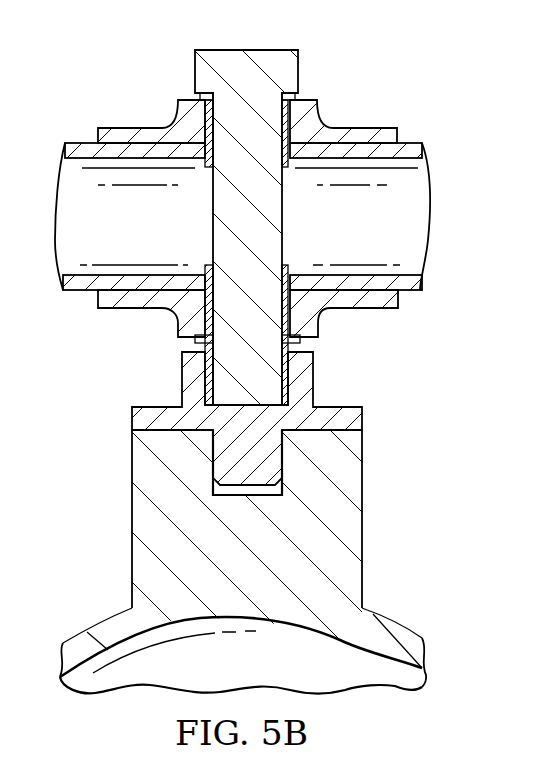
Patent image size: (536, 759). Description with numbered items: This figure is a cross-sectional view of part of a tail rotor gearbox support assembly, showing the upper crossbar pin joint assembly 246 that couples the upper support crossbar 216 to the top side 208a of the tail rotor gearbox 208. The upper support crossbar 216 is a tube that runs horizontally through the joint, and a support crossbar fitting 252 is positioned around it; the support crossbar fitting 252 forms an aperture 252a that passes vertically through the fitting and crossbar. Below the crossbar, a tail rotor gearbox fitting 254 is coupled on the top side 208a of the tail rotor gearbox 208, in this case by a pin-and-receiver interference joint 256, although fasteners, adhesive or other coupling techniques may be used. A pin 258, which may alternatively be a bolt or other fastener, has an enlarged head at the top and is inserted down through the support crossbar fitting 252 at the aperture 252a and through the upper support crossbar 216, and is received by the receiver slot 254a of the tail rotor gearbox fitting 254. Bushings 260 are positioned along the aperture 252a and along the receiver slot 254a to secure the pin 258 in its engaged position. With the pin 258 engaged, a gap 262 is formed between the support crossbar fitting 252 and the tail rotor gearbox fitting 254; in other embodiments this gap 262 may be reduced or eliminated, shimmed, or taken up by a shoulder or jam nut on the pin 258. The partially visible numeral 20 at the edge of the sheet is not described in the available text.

The device 20 is at (525, 278).
The tail rotor gearbox 208 is at (235, 529).
The top side of tail rotor gearbox 208a is at (142, 432).
The upper support crossbar 216 is at (83, 143).
The upper crossbar pin joint assembly 246 is at (272, 203).
The support crossbar fitting 252 is at (383, 124).
The aperture 252a is at (268, 99).
The tail rotor gearbox fitting 254 is at (338, 407).
The receiver slot 254a is at (237, 407).
The pin-and-receiver interference joint 256 is at (282, 458).
The pin 258 is at (193, 71).
The bushings 260 is at (290, 267).
The gap 262 is at (170, 350).